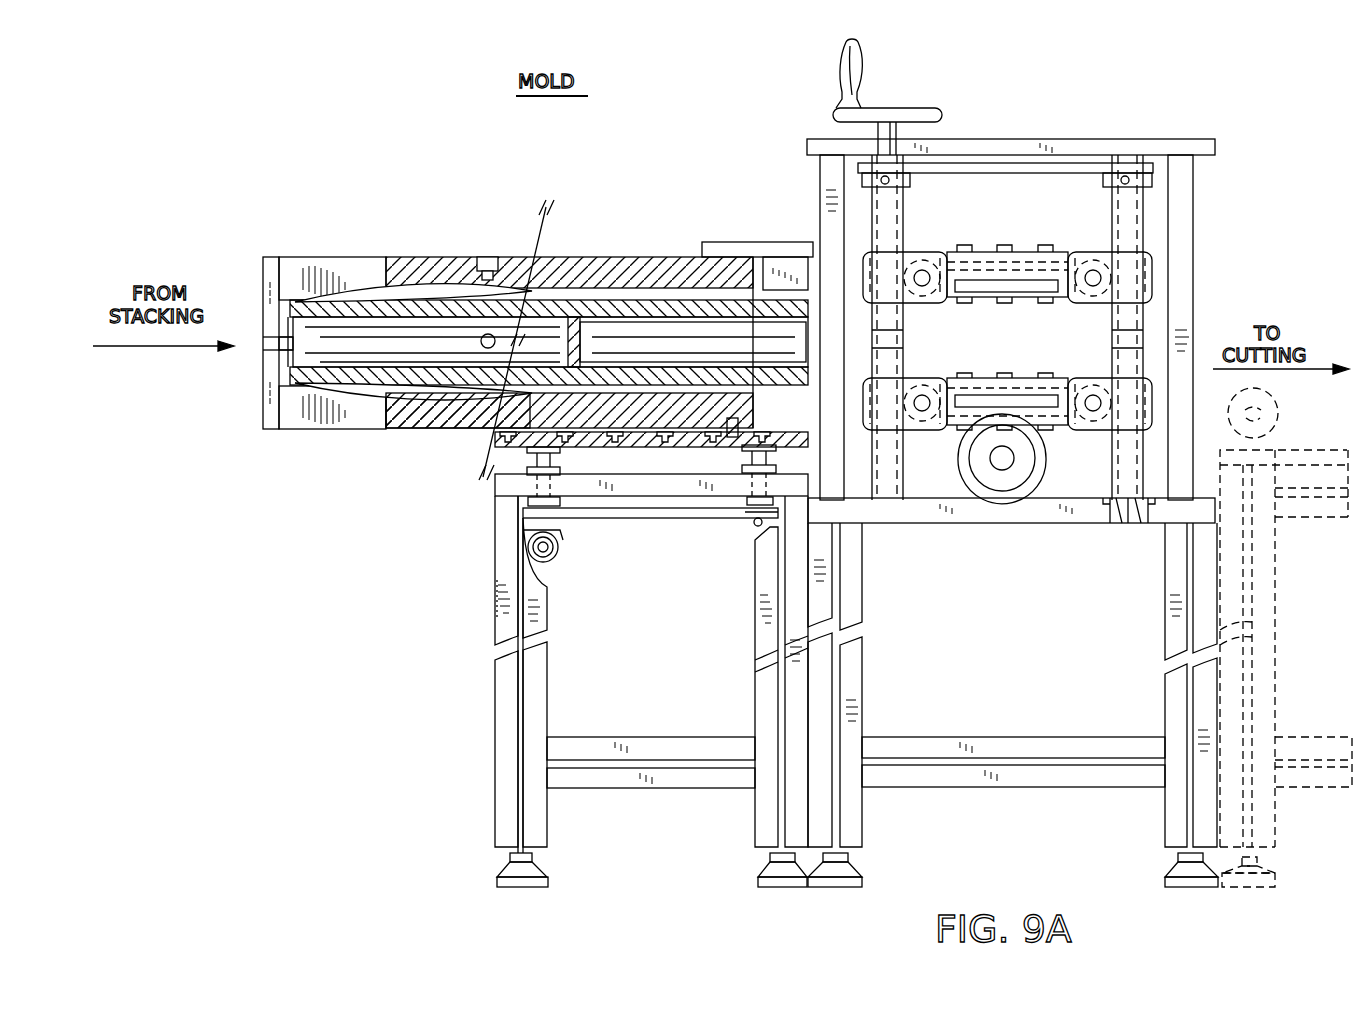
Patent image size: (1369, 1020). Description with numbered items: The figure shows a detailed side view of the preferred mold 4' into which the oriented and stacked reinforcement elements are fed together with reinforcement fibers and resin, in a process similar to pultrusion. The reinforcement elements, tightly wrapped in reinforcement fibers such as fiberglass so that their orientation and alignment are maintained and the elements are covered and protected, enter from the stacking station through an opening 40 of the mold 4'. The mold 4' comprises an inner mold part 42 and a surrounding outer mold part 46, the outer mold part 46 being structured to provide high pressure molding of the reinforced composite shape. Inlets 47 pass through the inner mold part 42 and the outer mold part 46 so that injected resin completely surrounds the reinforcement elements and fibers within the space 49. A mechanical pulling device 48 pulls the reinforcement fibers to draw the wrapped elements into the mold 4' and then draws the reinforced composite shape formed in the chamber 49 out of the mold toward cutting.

The opening 40 is at (272, 337).
The inner mold part 42 is at (625, 300).
The outer mold part 46 is at (448, 413).
The inlets 47 is at (487, 262).
The mechanical pulling device 48 is at (1085, 138).
The space 49 is at (436, 388).
The mold 4' is at (554, 309).